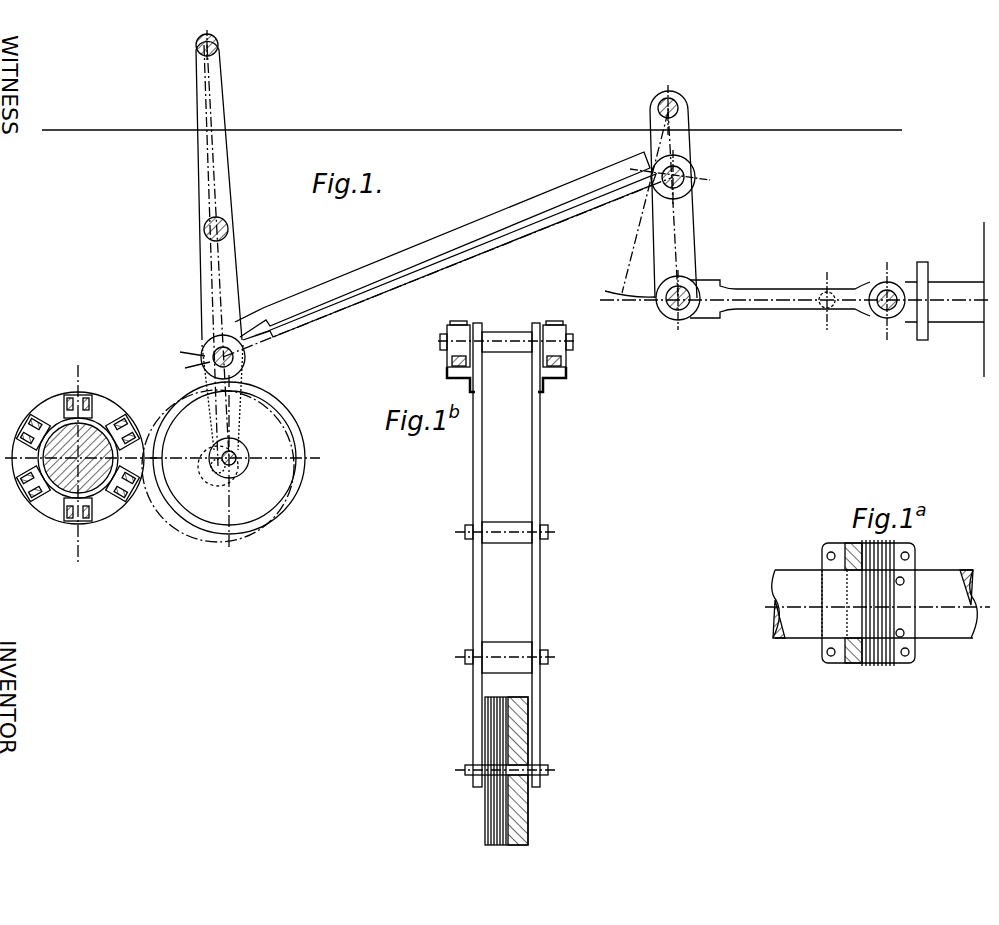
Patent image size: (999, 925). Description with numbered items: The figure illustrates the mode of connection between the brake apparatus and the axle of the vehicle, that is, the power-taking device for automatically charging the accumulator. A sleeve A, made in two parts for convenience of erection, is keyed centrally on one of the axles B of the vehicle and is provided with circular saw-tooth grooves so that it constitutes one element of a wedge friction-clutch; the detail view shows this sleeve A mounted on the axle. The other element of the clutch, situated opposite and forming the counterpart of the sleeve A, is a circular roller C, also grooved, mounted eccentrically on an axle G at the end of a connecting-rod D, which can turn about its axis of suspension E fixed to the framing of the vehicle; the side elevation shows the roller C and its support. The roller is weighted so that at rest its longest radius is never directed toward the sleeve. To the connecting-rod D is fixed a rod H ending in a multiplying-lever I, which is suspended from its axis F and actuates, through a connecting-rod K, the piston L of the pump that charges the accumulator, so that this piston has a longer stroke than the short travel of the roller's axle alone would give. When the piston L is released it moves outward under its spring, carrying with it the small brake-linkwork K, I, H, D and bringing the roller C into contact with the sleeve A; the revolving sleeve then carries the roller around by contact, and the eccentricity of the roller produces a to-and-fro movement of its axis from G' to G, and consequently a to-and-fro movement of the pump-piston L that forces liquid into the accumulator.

In FIG. 1, the sleeve A is at (82, 465).
In FIG. 1A, the sleeve A is at (877, 593).
In FIG. 1, the axle B is at (78, 458).
In FIG. 1, the roller C is at (235, 462).
In FIG. 1B, the roller C is at (506, 783).
In FIG. 1, the connecting-rod D is at (212, 253).
In FIG. 1B, the connecting-rod D is at (506, 555).
In FIG. 1, the axis of suspension E is at (216, 45).
In FIG. 1B, the axis of suspension E is at (507, 349).
In FIG. 1, the axis F is at (678, 110).
In FIG. 1, the axle G is at (229, 451).
In FIG. 1B, the axle G is at (506, 763).
In FIG. 1, the axle position G' is at (218, 466).
In FIG. 1, the rod H is at (448, 254).
In FIG. 1, the multiplying-lever I is at (657, 194).
In FIG. 1, the connecting-rod K is at (795, 301).
In FIG. 1, the piston L is at (944, 298).